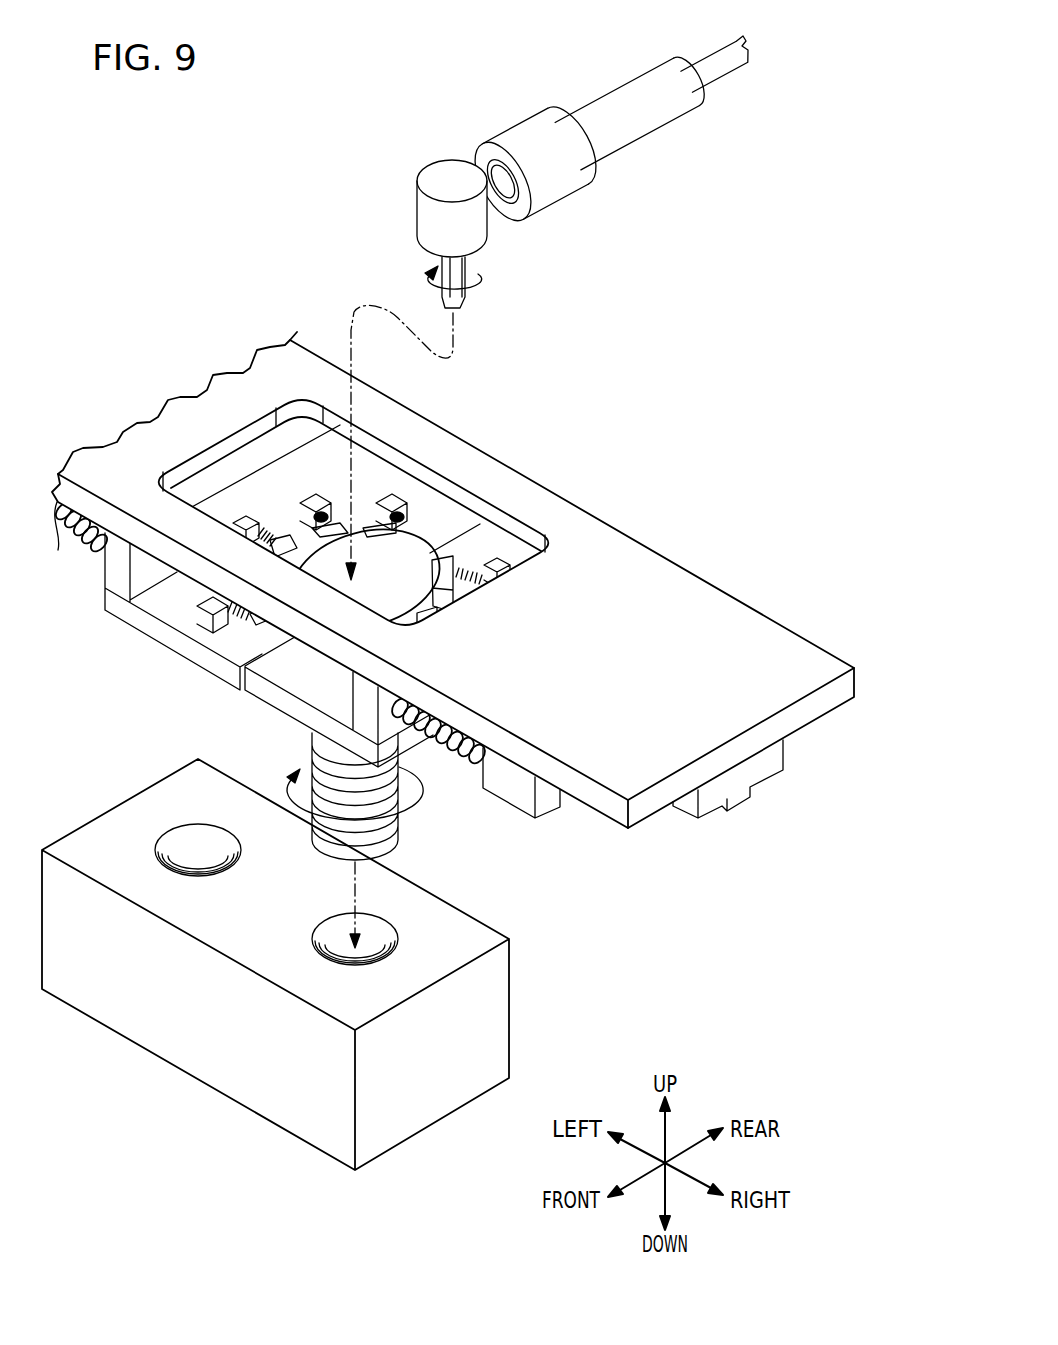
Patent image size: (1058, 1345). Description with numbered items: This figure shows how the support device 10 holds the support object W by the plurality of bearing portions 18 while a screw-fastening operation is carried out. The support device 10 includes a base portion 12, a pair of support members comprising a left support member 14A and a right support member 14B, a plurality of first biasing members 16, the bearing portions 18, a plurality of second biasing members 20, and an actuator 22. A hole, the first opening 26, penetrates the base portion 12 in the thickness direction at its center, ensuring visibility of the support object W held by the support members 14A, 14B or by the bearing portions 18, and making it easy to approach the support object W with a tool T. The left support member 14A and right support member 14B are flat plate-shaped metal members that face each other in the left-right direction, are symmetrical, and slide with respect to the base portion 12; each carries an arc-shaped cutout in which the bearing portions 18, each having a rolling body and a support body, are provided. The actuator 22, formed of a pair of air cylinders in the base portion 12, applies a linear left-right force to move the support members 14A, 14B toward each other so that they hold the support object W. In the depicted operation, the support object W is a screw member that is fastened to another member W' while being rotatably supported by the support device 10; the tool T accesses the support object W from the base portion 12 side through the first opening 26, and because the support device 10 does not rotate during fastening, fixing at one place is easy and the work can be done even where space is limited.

The support device 10 is at (451, 640).
The base portion 12 is at (453, 580).
The left support member 14A is at (137, 615).
The right support member 14B is at (300, 713).
The first biasing member 16 is at (90, 533).
The bearing portion 18 is at (440, 553).
The second biasing member 20 is at (240, 612).
The actuator 22 is at (737, 792).
The first opening 26 is at (497, 505).
The tool T is at (437, 176).
The support object W is at (371, 596).
The another member W' is at (275, 964).